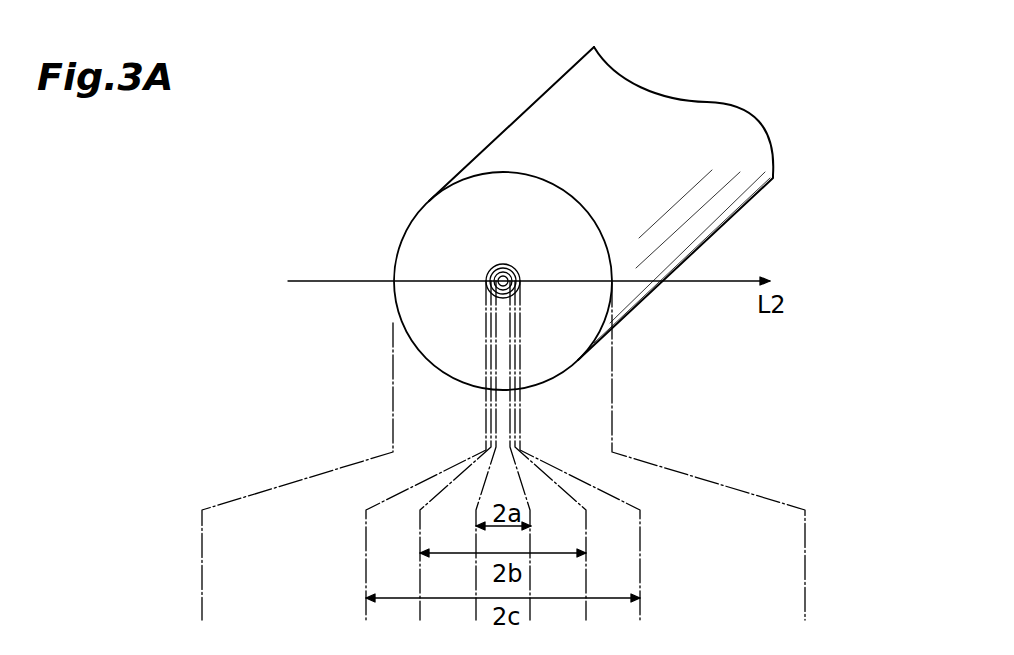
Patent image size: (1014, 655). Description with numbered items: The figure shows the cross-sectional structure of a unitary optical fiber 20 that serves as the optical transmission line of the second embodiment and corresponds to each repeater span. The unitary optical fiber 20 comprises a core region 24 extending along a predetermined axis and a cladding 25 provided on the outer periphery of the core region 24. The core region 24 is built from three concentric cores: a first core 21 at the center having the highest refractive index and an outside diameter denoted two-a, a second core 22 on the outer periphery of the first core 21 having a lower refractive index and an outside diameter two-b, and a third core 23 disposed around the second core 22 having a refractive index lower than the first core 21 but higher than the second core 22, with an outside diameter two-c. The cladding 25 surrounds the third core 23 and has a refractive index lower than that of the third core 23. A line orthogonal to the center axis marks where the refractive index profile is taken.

The unitary optical fiber 20 is at (733, 77).
The first core 21 is at (506, 305).
The second core 22 is at (497, 298).
The third core 23 is at (490, 292).
The core region 24 is at (431, 442).
The cladding 25 is at (413, 238).